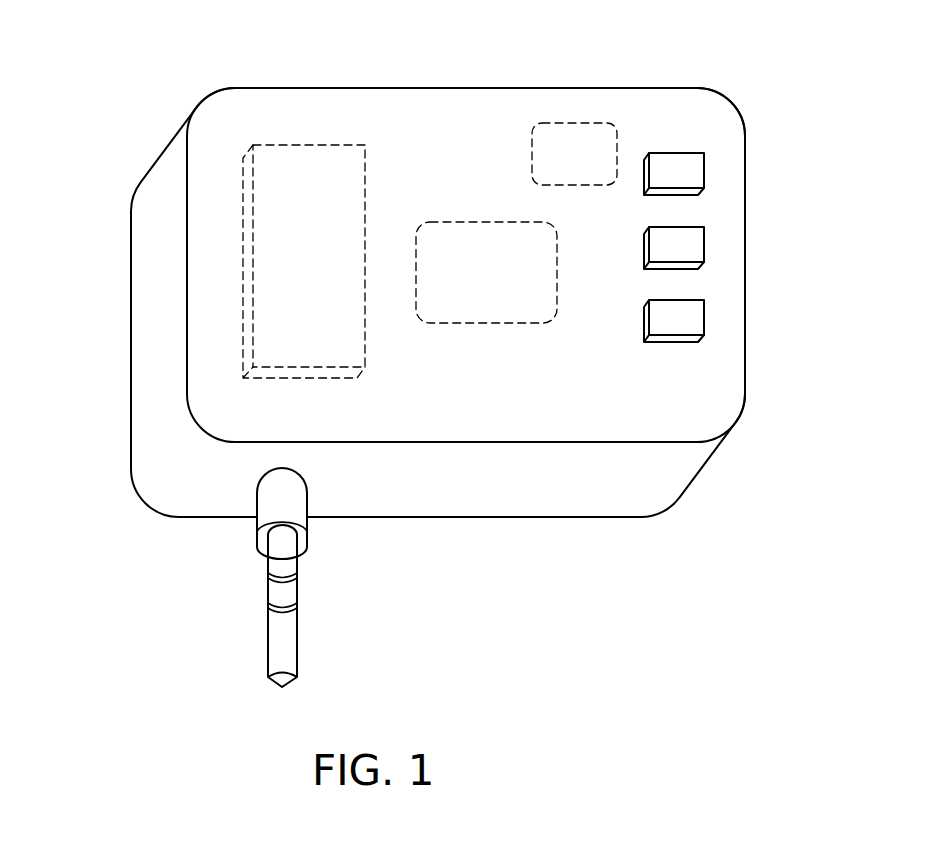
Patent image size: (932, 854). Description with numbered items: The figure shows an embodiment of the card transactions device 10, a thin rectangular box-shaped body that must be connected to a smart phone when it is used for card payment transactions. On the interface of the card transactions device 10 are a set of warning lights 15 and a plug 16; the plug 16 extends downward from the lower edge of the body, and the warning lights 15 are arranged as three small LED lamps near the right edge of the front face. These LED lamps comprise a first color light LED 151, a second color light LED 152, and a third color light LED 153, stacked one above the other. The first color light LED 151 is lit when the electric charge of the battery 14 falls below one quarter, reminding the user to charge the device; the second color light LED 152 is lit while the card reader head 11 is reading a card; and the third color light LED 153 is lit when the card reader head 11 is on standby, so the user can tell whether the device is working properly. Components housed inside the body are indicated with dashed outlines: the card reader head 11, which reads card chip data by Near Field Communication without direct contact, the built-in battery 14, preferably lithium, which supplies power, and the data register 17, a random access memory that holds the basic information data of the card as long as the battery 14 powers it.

The card transactions device 10 is at (829, 675).
The card reader head 11 is at (475, 220).
The battery 14 is at (297, 143).
The warning lights 15 is at (849, 177).
The first color light LED 151 is at (704, 170).
The second color light LED 152 is at (704, 243).
The third color light LED 153 is at (704, 316).
The plug 16 is at (277, 562).
The data register 17 is at (568, 123).